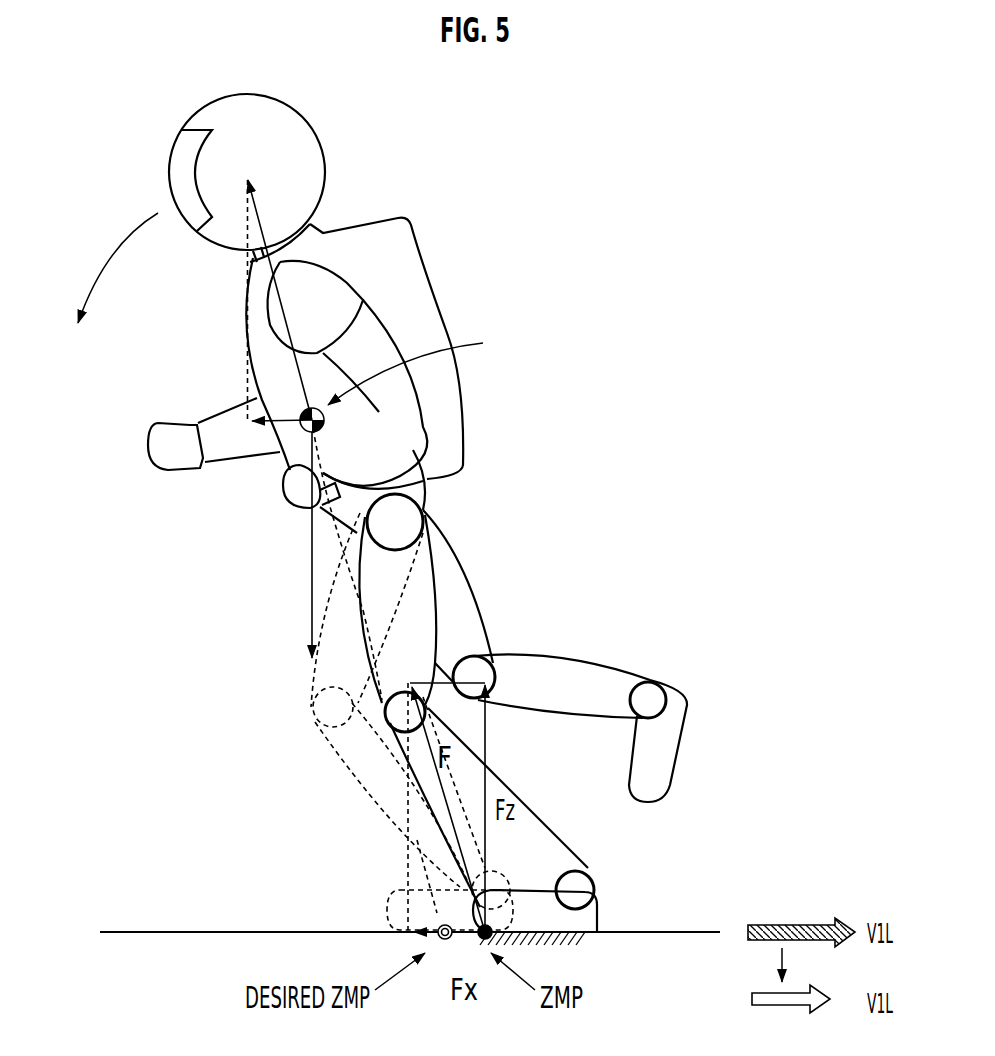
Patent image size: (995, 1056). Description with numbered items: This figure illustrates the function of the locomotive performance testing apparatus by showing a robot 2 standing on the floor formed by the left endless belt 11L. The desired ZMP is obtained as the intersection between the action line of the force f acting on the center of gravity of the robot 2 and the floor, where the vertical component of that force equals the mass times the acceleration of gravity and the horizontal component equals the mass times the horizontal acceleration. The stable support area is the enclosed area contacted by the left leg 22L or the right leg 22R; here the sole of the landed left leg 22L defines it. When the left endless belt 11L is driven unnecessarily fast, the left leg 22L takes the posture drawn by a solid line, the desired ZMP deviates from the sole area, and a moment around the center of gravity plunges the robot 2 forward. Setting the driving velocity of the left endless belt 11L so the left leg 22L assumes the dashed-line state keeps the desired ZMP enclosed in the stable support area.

The robot 2 is at (115, 152).
The right leg 22R is at (495, 622).
The left leg 22L is at (350, 658).
The left endless belt 11L is at (176, 931).